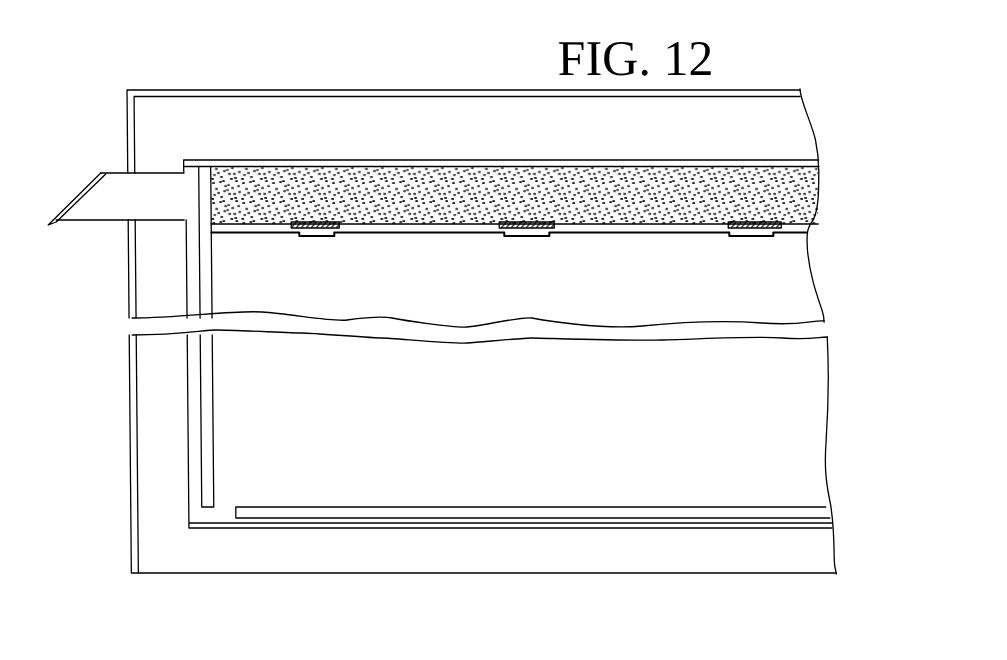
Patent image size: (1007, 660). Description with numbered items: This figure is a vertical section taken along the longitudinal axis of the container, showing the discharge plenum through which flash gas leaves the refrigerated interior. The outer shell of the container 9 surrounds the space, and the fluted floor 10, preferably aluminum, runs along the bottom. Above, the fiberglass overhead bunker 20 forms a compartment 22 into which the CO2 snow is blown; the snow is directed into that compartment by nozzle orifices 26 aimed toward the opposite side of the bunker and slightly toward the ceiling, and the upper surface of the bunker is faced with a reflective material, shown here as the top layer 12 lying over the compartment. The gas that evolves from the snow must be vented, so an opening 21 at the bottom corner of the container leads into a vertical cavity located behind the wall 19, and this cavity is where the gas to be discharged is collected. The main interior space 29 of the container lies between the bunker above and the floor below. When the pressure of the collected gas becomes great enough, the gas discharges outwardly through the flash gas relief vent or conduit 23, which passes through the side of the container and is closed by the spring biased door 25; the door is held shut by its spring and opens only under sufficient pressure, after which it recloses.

The housing 9 is at (360, 90).
The fluted floor 10 is at (822, 520).
The top plate 12 is at (806, 162).
The wall 19 is at (210, 453).
The overhead bunker 20 is at (790, 237).
The opening 21 is at (209, 516).
The compartment 22 is at (806, 188).
The flash gas relief vent 23 is at (113, 187).
The spring biased door 25 is at (80, 188).
The nozzle orifices 26 is at (532, 234).
The chamber 29 is at (812, 420).